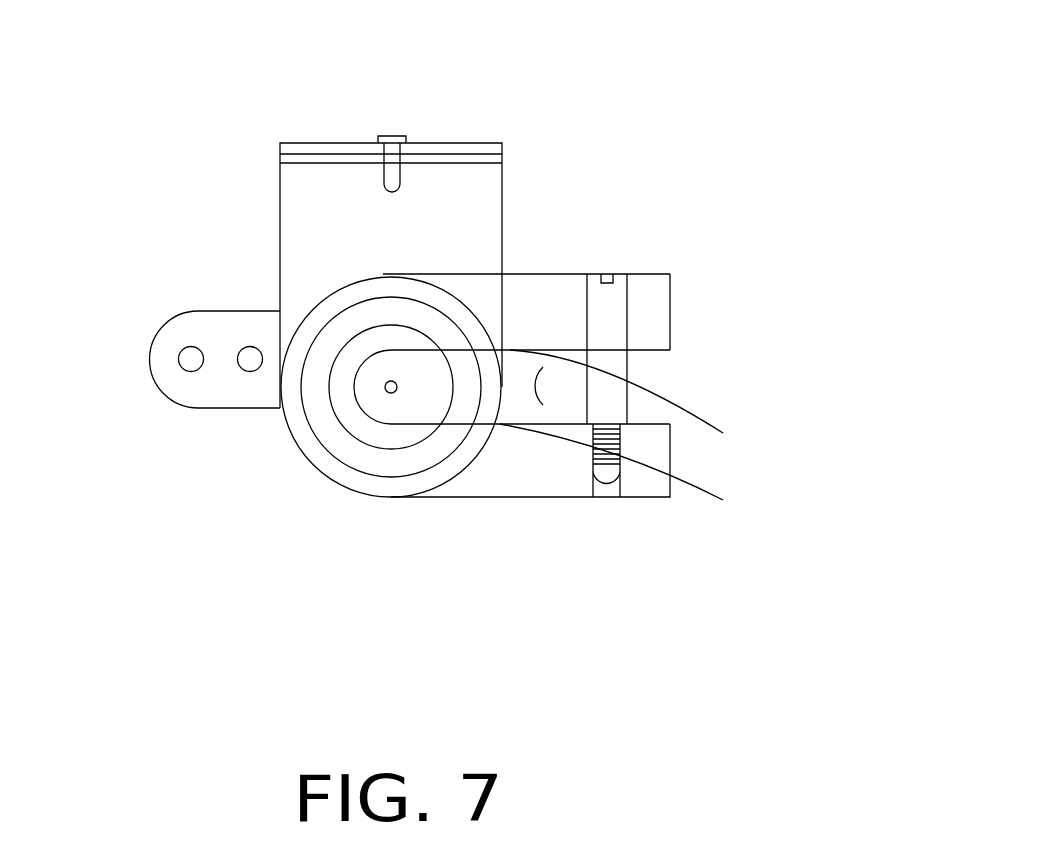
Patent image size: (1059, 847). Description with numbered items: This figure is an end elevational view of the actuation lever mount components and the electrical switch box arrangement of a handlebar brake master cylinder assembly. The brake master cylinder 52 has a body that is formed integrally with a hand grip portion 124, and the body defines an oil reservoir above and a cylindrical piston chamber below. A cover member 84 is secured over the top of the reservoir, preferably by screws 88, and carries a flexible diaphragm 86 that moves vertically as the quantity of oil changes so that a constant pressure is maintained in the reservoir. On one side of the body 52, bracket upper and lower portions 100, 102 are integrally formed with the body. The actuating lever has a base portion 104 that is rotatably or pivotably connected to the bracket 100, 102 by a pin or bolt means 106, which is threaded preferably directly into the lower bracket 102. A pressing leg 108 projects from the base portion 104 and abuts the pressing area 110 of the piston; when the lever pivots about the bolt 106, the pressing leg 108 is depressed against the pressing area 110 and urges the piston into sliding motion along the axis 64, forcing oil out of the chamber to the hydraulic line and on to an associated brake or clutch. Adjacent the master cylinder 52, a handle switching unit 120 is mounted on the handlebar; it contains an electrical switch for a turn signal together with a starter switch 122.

The brake master cylinder 52 is at (502, 272).
The axis 64 is at (398, 393).
The cover member 84 is at (458, 140).
The flexible diaphragm 86 is at (503, 160).
The screws 88 is at (375, 185).
The bracket upper portion 100 is at (668, 316).
The bracket lower portion 102 is at (645, 495).
The base portion 104 is at (670, 330).
The pin or bolt means 106 is at (629, 300).
The pressing leg 108 is at (394, 425).
The pressing area 110 is at (333, 407).
The handle switching unit 120 is at (205, 410).
The starter switch 122 is at (247, 343).
The hand grip portion 124 is at (384, 272).